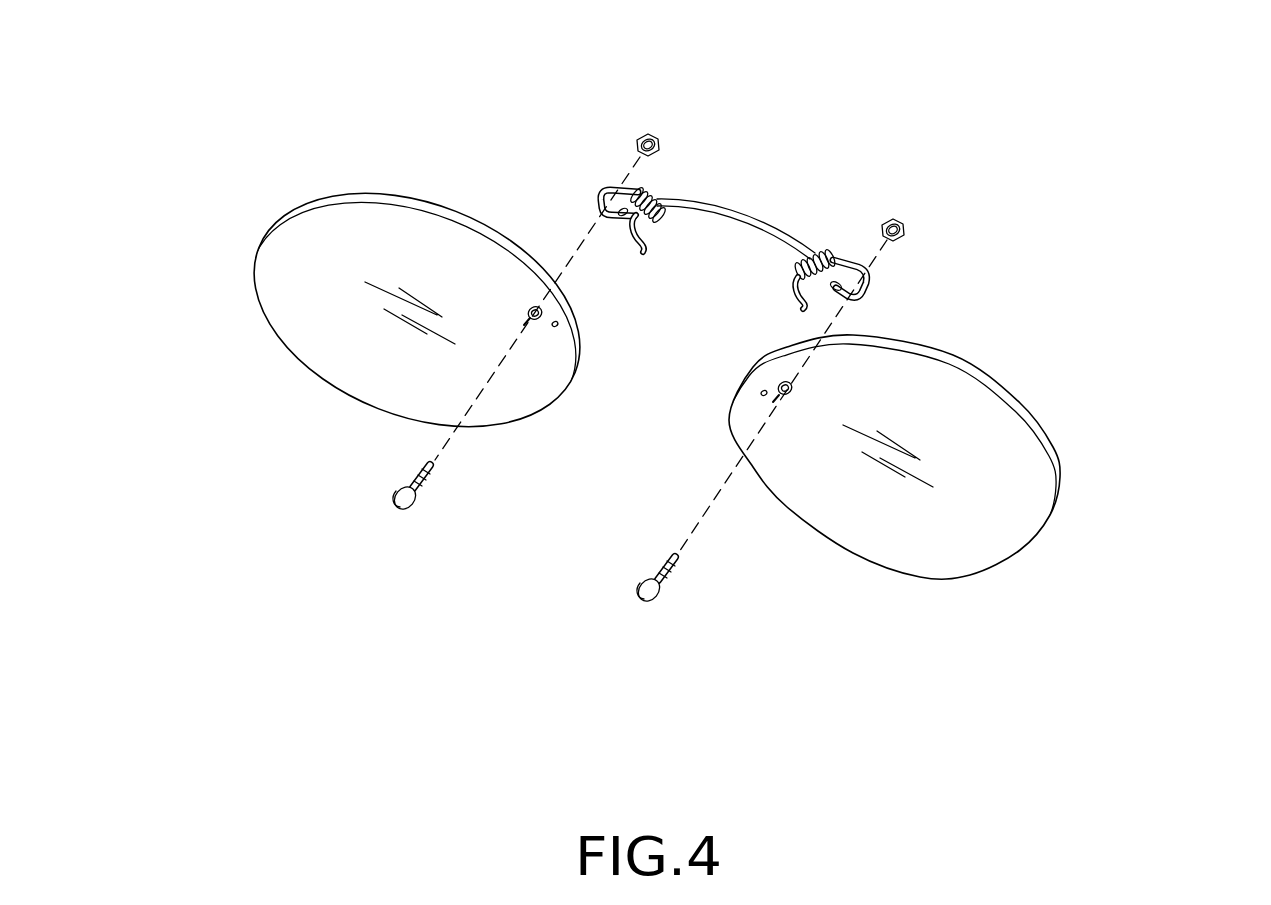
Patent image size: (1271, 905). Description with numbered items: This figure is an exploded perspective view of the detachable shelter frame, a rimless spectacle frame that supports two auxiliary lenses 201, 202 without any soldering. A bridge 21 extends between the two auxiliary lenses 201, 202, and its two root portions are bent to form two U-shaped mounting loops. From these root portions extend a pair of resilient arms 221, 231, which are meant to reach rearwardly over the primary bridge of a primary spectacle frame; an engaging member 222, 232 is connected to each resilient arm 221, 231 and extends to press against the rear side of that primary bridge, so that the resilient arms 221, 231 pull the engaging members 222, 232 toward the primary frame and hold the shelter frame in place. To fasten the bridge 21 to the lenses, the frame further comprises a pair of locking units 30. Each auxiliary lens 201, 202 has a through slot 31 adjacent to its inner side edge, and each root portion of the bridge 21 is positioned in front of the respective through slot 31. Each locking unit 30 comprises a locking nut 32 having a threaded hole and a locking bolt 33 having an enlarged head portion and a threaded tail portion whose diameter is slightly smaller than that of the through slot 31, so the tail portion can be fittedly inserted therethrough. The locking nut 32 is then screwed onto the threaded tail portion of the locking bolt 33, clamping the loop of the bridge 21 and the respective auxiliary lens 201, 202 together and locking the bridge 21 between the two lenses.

The auxiliary lens 201 is at (325, 232).
The auxiliary lens 202 is at (1023, 495).
The bridge 21 is at (705, 215).
The resilient arm 221 is at (657, 192).
The engaging member 222 is at (648, 235).
The resilient arm 231 is at (830, 253).
The engaging member 232 is at (812, 303).
The locking unit 30 is at (231, 528).
The through slot 31 is at (543, 328).
The locking nut 32 is at (638, 144).
The locking bolt 33 is at (407, 483).